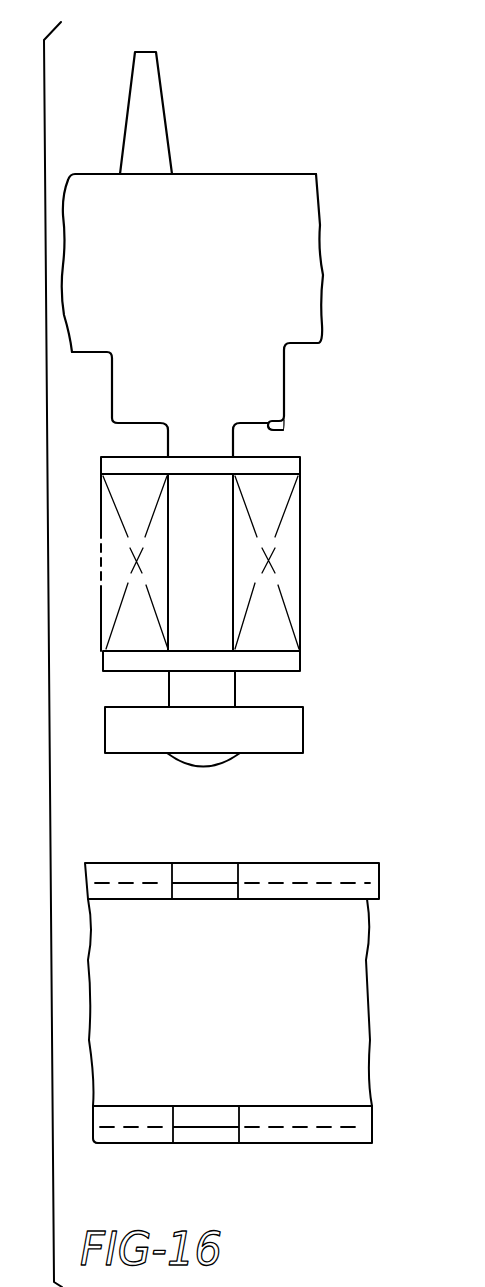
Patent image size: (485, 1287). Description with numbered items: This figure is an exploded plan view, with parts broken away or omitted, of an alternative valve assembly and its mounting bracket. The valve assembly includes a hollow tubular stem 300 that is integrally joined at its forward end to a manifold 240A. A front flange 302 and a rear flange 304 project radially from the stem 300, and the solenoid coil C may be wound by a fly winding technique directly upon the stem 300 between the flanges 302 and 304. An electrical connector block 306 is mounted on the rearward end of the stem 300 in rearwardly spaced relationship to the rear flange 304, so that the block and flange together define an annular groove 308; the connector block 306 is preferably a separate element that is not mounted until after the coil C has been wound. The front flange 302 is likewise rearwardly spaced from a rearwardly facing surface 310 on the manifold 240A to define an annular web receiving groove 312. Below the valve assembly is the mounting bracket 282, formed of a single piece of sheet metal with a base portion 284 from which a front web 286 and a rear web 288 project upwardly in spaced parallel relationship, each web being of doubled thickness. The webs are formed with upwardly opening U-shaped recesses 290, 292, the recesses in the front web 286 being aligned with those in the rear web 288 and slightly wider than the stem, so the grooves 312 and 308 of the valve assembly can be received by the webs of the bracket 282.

The manifold 240A is at (308, 138).
The annular web receiving groove 312 is at (138, 443).
The rearwardly facing surface 310 is at (289, 426).
The front flange 302 is at (290, 462).
The hollow tubular stem 300 is at (215, 527).
The solenoid coil C is at (301, 569).
The rear flange 304 is at (293, 660).
The annular groove 308 is at (264, 690).
The electrical connector block 306 is at (280, 748).
The base portion 284 is at (168, 1008).
The U-shaped recess 290 is at (237, 889).
The front web 286 is at (313, 893).
The rear web 288 is at (330, 1068).
The U-shaped recess 292 is at (239, 1133).
The mounting bracket 282 is at (131, 1147).